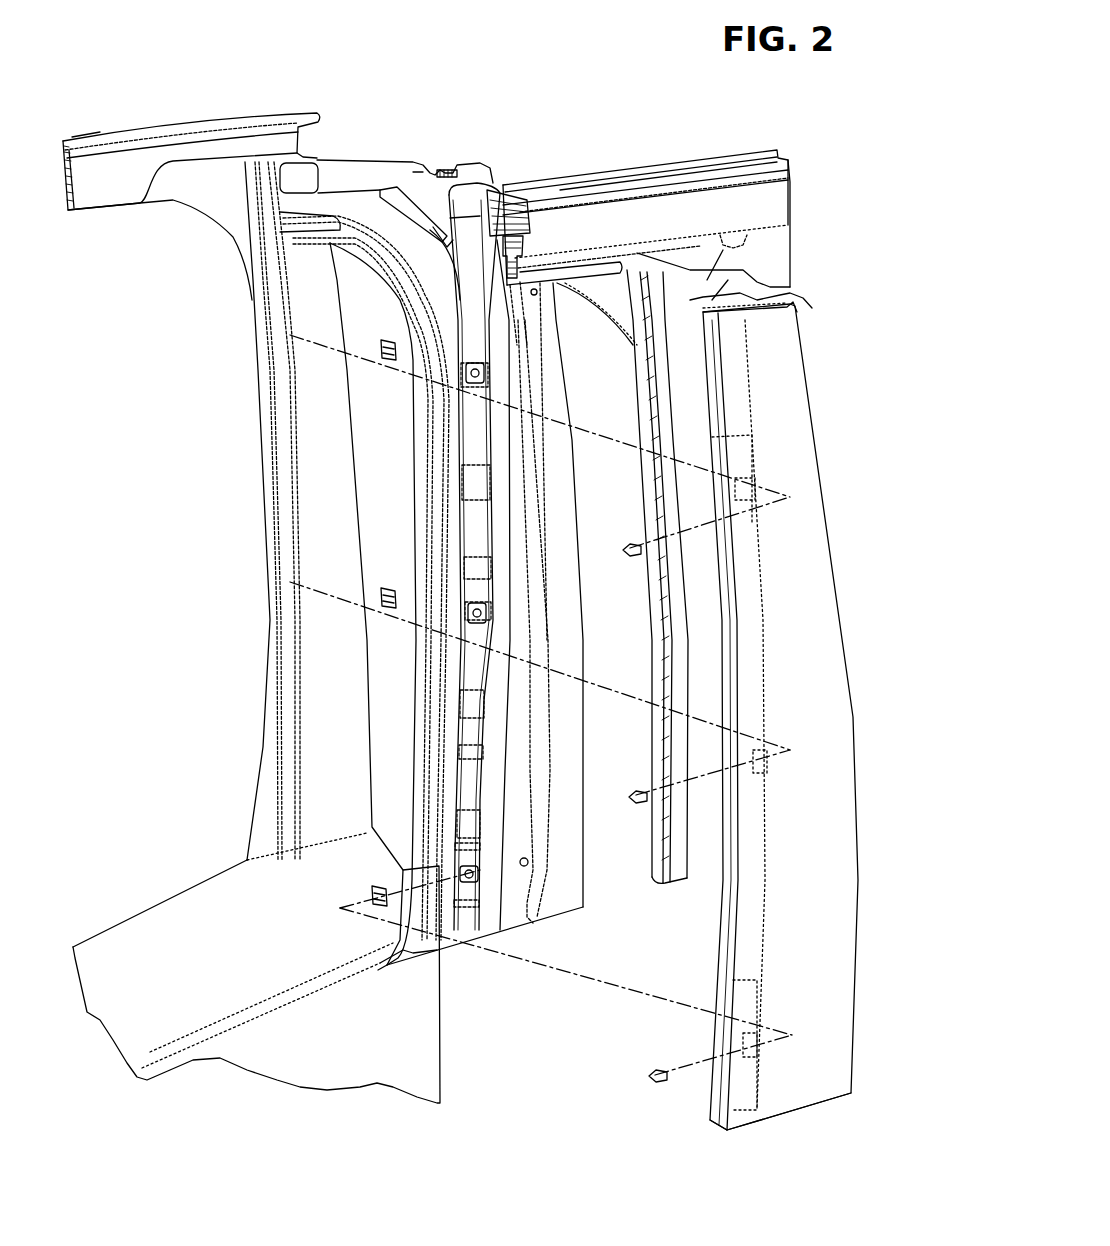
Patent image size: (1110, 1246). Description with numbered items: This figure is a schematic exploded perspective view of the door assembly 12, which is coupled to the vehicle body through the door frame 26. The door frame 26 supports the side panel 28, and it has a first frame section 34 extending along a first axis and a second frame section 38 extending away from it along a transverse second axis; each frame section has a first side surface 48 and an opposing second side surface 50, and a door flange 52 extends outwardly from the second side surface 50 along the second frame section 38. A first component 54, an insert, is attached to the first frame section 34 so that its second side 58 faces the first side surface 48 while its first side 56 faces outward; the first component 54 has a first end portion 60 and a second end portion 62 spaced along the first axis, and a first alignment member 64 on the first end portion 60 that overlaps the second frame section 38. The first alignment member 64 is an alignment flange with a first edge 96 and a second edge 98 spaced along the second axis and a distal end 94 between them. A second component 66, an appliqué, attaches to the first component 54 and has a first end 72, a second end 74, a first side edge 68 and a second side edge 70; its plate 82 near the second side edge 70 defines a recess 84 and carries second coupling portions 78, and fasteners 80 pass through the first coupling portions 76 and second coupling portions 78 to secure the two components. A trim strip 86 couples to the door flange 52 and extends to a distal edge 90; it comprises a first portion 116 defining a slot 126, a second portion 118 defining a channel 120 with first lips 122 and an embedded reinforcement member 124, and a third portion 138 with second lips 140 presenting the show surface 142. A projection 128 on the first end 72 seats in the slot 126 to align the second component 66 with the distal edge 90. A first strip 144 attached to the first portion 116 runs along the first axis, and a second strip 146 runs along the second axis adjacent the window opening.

The door assembly 12 is at (603, 101).
The door frame 26 is at (87, 193).
The side panel 28 is at (307, 1045).
The first frame section 34 is at (330, 455).
The second frame section 38 is at (127, 157).
The first side surface 48 is at (117, 193).
The second side surface 50 is at (65, 193).
The door flange 52 is at (234, 125).
The first component 54 is at (555, 395).
The first side 56 is at (425, 465).
The second side 58 is at (373, 267).
The first end portion 60 is at (497, 163).
The second end portion 62 is at (552, 937).
The first alignment member 64 is at (425, 160).
The second component 66 is at (812, 610).
The first side edge 68 is at (830, 502).
The second side edge 70 is at (713, 360).
The first end 72 is at (812, 308).
The second end 74 is at (780, 1110).
The first coupling portions 76 is at (505, 360).
The second coupling portions 78 is at (752, 495).
The fasteners 80 is at (388, 340).
The plate 82 is at (720, 935).
The recess 84 is at (725, 982).
The trim strip 86 is at (808, 156).
The distal edge 90 is at (790, 178).
The distal end 94 is at (445, 189).
The first edge 96 is at (452, 166).
The second edge 98 is at (410, 172).
The first portion 116 is at (770, 265).
The second portion 118 is at (528, 245).
The channel 120 is at (439, 265).
The first lips 122 is at (435, 237).
The reinforcement member 124 is at (535, 212).
The slot 126 is at (748, 232).
The projection 128 is at (733, 295).
The third portion 138 is at (668, 200).
The second lips 140 is at (720, 168).
The show surface 142 is at (595, 200).
The first strip 144 is at (655, 503).
The second strip 146 is at (542, 276).